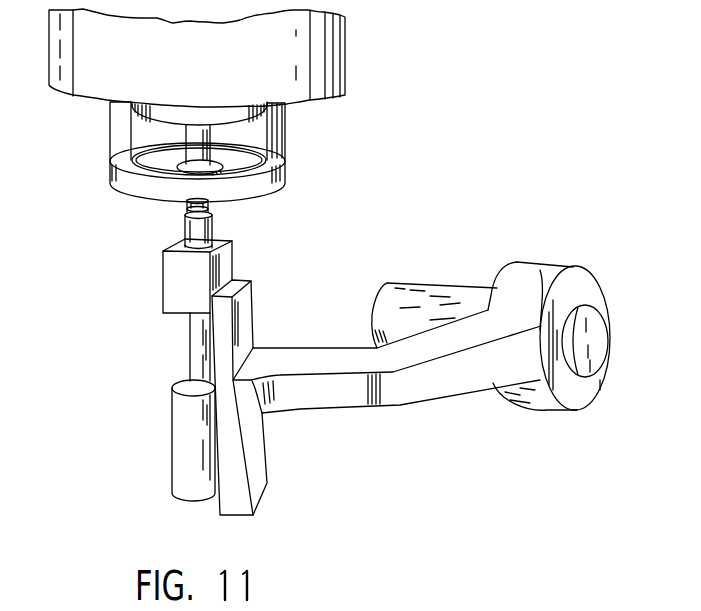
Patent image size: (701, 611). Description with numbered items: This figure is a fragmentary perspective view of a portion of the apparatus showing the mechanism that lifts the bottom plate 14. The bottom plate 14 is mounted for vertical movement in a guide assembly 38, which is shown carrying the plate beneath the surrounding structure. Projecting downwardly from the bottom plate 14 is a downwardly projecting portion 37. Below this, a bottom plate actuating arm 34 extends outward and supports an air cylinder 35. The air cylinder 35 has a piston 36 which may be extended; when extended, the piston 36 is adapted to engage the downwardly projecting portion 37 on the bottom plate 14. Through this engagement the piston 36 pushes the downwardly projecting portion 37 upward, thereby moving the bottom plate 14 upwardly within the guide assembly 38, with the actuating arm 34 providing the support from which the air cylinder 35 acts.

The bottom plate 14 is at (138, 117).
The guide assembly 38 is at (290, 150).
The downwardly projecting portion 37 is at (215, 205).
The piston 36 is at (200, 229).
The air cylinder 35 is at (180, 443).
The bottom plate actuating arm 34 is at (377, 387).